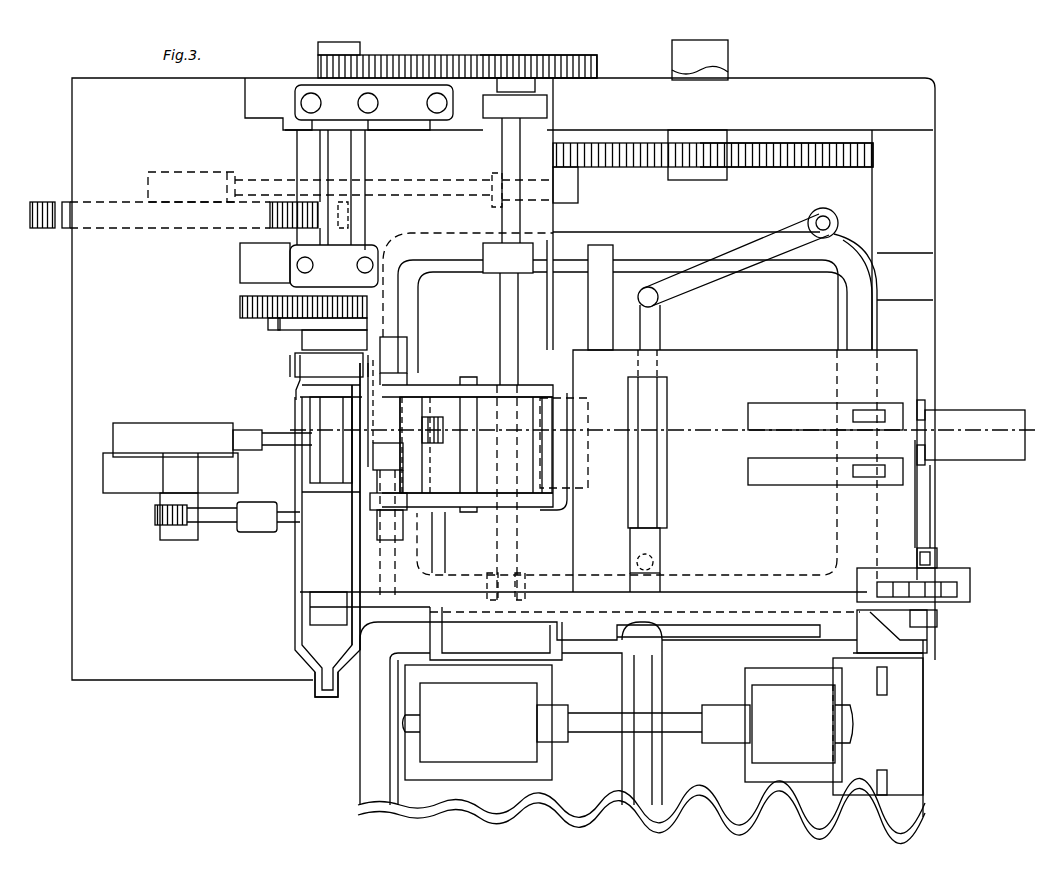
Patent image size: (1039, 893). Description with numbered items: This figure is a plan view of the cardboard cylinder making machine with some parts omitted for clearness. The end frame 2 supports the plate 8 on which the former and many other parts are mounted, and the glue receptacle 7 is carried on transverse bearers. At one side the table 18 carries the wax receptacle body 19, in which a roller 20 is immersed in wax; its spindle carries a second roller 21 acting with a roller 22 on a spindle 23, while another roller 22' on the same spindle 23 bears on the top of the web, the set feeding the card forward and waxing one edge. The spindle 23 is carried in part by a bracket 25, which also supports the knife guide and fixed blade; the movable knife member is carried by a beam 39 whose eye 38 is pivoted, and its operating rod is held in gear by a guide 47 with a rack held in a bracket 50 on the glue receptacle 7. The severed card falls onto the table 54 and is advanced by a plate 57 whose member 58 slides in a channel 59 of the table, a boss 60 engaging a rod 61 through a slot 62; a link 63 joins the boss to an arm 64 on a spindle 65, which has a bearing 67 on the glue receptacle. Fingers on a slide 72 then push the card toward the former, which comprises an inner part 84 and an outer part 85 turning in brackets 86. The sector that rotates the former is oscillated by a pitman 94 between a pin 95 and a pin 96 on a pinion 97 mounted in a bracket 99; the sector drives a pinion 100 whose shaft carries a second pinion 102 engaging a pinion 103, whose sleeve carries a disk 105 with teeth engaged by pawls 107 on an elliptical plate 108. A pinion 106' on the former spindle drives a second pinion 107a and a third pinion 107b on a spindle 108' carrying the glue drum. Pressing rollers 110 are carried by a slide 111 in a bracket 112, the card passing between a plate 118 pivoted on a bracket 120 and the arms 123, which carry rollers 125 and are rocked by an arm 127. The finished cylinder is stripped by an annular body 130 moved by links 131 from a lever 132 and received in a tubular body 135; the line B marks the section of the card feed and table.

The frame 2 is at (590, 447).
The glue receptacle 7 is at (635, 306).
The plate 8 is at (218, 379).
The table 18 is at (641, 733).
The wax receptacle body 19 is at (503, 722).
The roller 20 is at (478, 683).
The second roller 21 is at (792, 778).
The roller 22 is at (802, 724).
The second roller 22' is at (470, 722).
The spindle 23 is at (684, 732).
The bracket 25 is at (878, 724).
The eye 38 is at (312, 602).
The beam or bar 39 is at (763, 594).
The guide 47 is at (968, 581).
The bracket 50 is at (938, 557).
The table 54 is at (745, 471).
The plate or bar 57 is at (541, 615).
The member 58 is at (446, 566).
The channel 59 is at (446, 532).
The boss 60 is at (660, 556).
The rod 61 is at (652, 428).
The slot 62 is at (668, 395).
The link 63 is at (657, 343).
The arm 64 is at (722, 278).
The spindle 65 is at (828, 222).
The bearing 67 is at (851, 235).
The slide 72 is at (955, 420).
The former part 84 is at (350, 220).
The former outer portion 85 is at (296, 388).
The brackets 86 is at (346, 186).
The pitman 94 is at (426, 181).
The pin 95 is at (150, 200).
The pin 96 is at (575, 172).
The pinion 97 is at (794, 162).
The bracket 99 is at (722, 78).
The pinion 100 is at (275, 215).
The second pinion 102 is at (258, 318).
The pinion 103 is at (367, 307).
The disk 105 is at (312, 336).
The pinion 106' is at (361, 47).
The pawls 107 is at (278, 326).
The second pinion 107a is at (412, 64).
The third pinion 107b is at (533, 65).
The elliptical plate 108 is at (546, 489).
The spindle 108' is at (524, 231).
The rollers 110 is at (338, 464).
The slide 111 is at (248, 432).
The bracket 112 is at (201, 481).
The plate 118 is at (421, 393).
The bracket 120 is at (443, 452).
The arms 123 is at (449, 383).
The rollers 125 is at (540, 458).
The arm 127 is at (376, 458).
The annular body 130 is at (329, 365).
The links 131 is at (350, 556).
The lever 132 is at (329, 700).
The tubular body 135 is at (356, 545).
The section line B is at (659, 421).